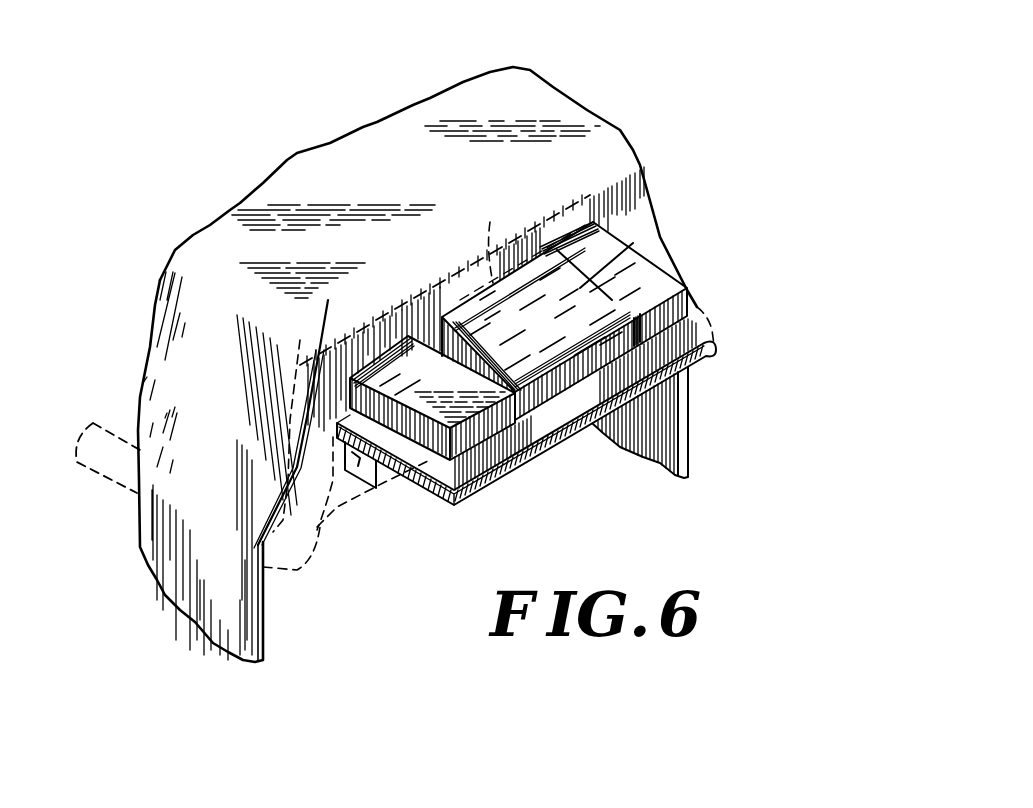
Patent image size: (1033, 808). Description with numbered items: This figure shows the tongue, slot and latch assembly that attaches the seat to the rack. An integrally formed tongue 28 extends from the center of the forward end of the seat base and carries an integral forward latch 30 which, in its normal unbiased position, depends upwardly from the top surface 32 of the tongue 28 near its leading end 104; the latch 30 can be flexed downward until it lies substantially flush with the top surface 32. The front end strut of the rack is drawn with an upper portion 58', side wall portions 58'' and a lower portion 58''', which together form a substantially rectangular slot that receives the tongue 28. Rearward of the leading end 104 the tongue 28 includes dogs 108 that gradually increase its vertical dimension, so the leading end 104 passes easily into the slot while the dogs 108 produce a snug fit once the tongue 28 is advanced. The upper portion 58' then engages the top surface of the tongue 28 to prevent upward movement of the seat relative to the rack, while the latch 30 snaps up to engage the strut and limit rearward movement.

The tongue 28 is at (747, 339).
The forward latch 30 is at (621, 268).
The top surface 32 is at (653, 288).
The leading end 104 is at (513, 423).
The dogs 108 is at (370, 470).
The upper portion 58' is at (499, 242).
The side wall portions 58'' is at (270, 455).
The lower portion 58''' is at (373, 511).